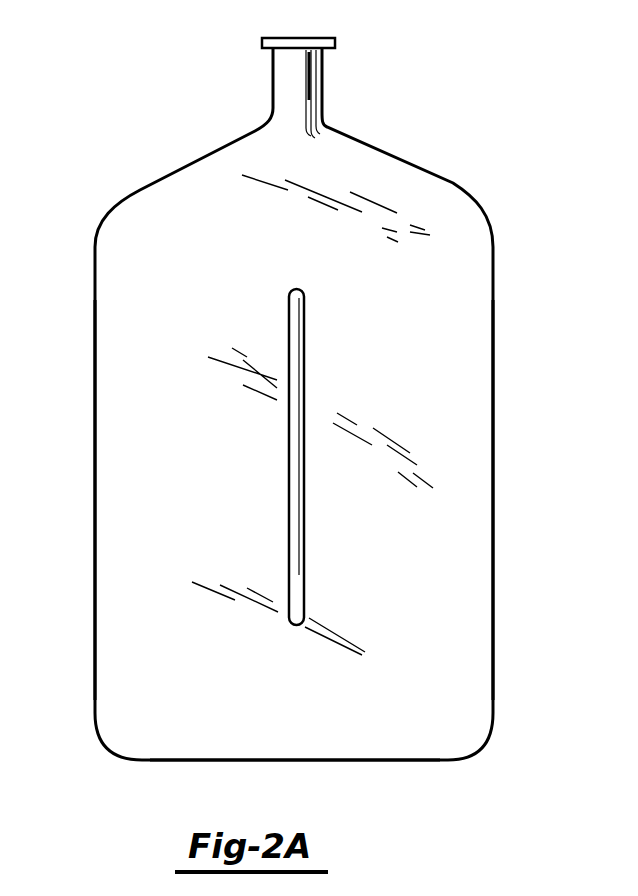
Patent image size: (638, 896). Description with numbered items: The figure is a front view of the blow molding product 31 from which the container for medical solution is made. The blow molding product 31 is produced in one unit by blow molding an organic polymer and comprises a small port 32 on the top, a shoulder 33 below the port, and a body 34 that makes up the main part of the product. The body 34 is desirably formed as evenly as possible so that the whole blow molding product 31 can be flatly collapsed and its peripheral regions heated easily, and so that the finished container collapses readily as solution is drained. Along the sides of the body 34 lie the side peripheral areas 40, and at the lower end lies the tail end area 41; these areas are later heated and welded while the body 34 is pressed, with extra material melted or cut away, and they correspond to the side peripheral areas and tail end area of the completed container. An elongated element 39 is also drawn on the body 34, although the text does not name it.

The blow molding product 31 is at (515, 223).
The small port 32 is at (302, 96).
The shoulder 33 is at (373, 175).
The body 34 is at (452, 435).
The sight tube 39 is at (305, 360).
The side peripheral areas 40 is at (94, 570).
The tail end area 41 is at (322, 760).